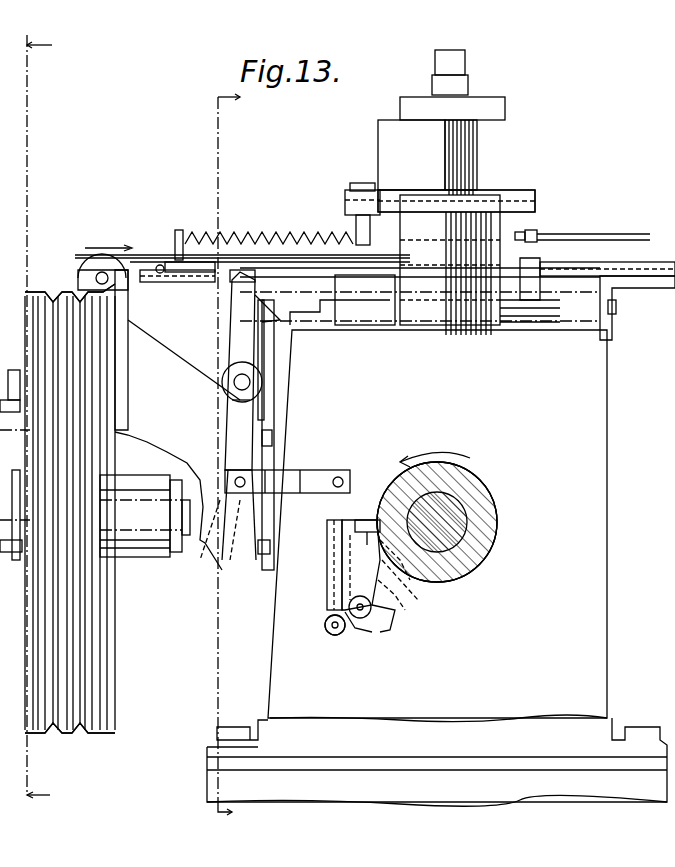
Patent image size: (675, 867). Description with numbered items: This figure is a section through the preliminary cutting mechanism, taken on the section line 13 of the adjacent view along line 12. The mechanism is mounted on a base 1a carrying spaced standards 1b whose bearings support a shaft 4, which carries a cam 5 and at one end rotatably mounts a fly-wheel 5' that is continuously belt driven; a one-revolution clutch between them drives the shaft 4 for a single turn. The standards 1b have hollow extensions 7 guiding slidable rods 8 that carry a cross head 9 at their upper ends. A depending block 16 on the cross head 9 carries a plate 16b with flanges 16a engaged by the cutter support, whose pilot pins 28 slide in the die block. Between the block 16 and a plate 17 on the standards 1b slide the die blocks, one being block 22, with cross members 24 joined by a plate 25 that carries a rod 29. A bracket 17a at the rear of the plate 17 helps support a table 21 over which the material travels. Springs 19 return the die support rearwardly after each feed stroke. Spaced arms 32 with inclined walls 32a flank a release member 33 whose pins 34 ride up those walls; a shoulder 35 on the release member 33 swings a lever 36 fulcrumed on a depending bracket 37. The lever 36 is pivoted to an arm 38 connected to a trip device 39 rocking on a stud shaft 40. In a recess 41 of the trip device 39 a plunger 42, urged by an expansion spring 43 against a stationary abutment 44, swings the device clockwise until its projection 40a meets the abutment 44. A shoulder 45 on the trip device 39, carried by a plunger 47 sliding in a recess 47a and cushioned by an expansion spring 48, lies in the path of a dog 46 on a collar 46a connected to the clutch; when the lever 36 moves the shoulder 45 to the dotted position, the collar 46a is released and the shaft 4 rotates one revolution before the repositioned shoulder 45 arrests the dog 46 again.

The expansion spring 13 is at (54, 422).
The bushed collar 12 is at (241, 456).
The fly-wheel 5' is at (67, 508).
The cam 5 is at (71, 508).
The release member 33 is at (248, 262).
The springs 19 is at (310, 238).
The pilot pins 28 is at (356, 230).
The cross head 9 is at (505, 118).
The depending block 16 is at (380, 150).
The slidable rods 8 is at (468, 160).
The plate 16b is at (515, 190).
The flanges 16a is at (535, 205).
The hollow extensions 7 is at (420, 320).
The rod 29 is at (608, 232).
The cross members 24 is at (395, 282).
The plate 17 is at (350, 325).
The plate 25 is at (528, 262).
The block 22 is at (530, 296).
The table 21 is at (608, 272).
The bracket 17a is at (620, 305).
The lever 36 is at (232, 350).
The shoulder 35 is at (232, 310).
The depending bracket 37 is at (268, 380).
The arm 38 is at (322, 470).
The standards 1b is at (268, 686).
The base 1a is at (220, 778).
The shaft 4 is at (470, 505).
The collar 46a is at (497, 522).
The dog 46 is at (400, 478).
The expansion spring 43 is at (327, 560).
The recess 41 is at (342, 590).
The shoulder 45 is at (365, 518).
The trip device 39 is at (366, 618).
The plunger 42 is at (325, 622).
The abutment 44 is at (332, 636).
The stud shaft 40 is at (388, 625).
The projection 40a is at (362, 632).
The plunger 47 is at (408, 578).
The recess 47a is at (418, 598).
The expansion spring 48 is at (403, 610).
The arms 32 is at (150, 282).
The inclined walls 32a is at (178, 282).
The pins 34 is at (160, 264).